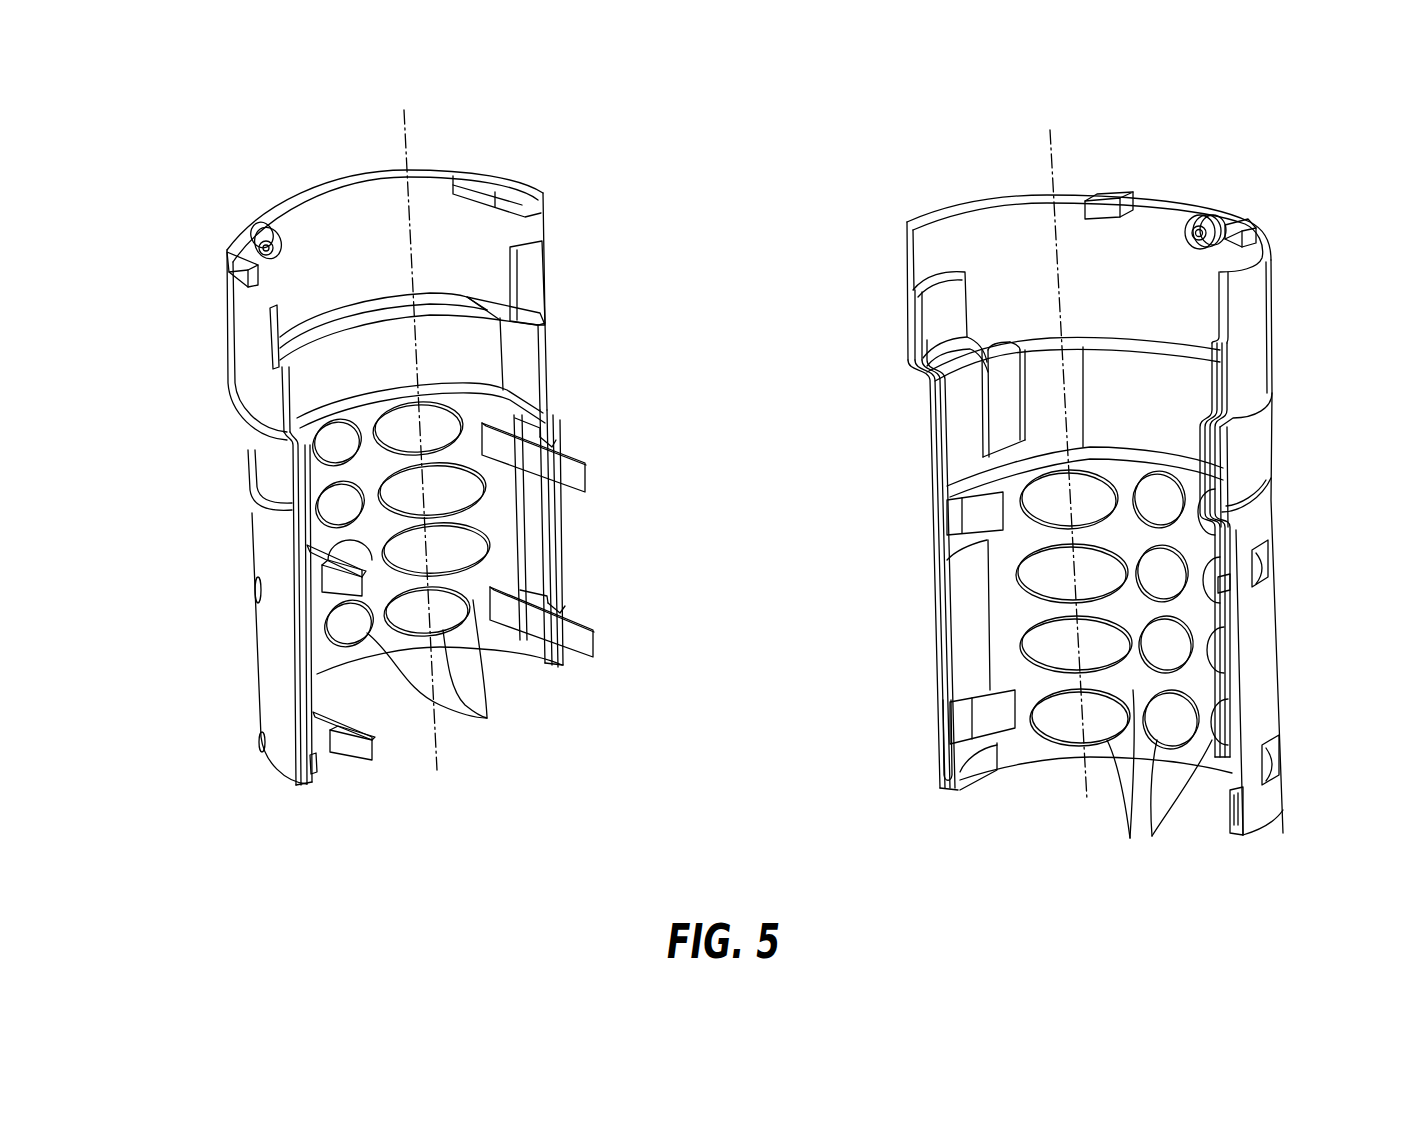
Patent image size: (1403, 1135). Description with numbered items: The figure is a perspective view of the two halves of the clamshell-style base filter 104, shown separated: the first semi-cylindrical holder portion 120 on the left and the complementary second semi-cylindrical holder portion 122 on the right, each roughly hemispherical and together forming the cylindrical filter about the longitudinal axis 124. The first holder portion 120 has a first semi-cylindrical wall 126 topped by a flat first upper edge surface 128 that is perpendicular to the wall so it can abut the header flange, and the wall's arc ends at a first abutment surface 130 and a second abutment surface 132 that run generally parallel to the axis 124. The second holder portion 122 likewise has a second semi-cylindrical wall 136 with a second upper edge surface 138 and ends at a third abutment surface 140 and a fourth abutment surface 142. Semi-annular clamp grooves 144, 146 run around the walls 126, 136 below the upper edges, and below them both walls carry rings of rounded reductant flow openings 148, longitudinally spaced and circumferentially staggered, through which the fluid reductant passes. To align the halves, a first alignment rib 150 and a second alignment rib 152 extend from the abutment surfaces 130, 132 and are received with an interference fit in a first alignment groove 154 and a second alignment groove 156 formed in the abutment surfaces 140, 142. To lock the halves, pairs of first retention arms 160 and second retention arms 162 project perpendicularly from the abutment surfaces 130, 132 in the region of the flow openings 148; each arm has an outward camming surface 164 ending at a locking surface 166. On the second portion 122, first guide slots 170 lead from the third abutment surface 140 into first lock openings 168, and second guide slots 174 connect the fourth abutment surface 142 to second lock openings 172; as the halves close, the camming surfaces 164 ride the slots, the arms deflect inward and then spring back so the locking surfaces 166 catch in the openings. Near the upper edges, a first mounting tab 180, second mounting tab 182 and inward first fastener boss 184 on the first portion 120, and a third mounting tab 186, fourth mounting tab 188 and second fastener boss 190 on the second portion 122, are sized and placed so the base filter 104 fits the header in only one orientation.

The base filter 104 is at (757, 143).
The first semi-cylindrical holder portion 120 is at (198, 122).
The second semi-cylindrical holder portion 122 is at (1284, 158).
The longitudinal axis 124 is at (410, 134).
The first semi-cylindrical wall 126 is at (236, 356).
The first upper edge surface 128 is at (306, 178).
The first abutment surface 130 is at (270, 441).
The second abutment surface 132 is at (549, 232).
The second semi-cylindrical wall 136 is at (1278, 362).
The second upper edge surface 138 is at (1012, 194).
The third abutment surface 140 is at (1224, 336).
The fourth abutment surface 142 is at (908, 263).
The semi-annular clamp groove 144 is at (284, 476).
The semi-annular clamp groove 146 is at (1253, 464).
The reductant flow openings 148 is at (766, 633).
The first alignment rib 150 is at (270, 509).
The second alignment rib 152 is at (549, 356).
The first alignment groove 154 is at (1259, 418).
The second alignment groove 156 is at (921, 374).
The first retention arms 160 is at (305, 548).
The second retention arms 162 is at (542, 437).
The camming surface 164 is at (588, 458).
The locking surface 166 is at (553, 447).
The first lock openings 168 is at (948, 559).
The first guide slots 170 is at (955, 528).
The second lock openings 172 is at (1269, 568).
The second guide slots 174 is at (1231, 596).
The first mounting tab 180 is at (247, 262).
The second mounting tab 182 is at (524, 184).
The first fastener boss 184 is at (262, 232).
The third mounting tab 186 is at (1248, 221).
The fourth mounting tab 188 is at (1110, 205).
The second fastener boss 190 is at (1204, 214).